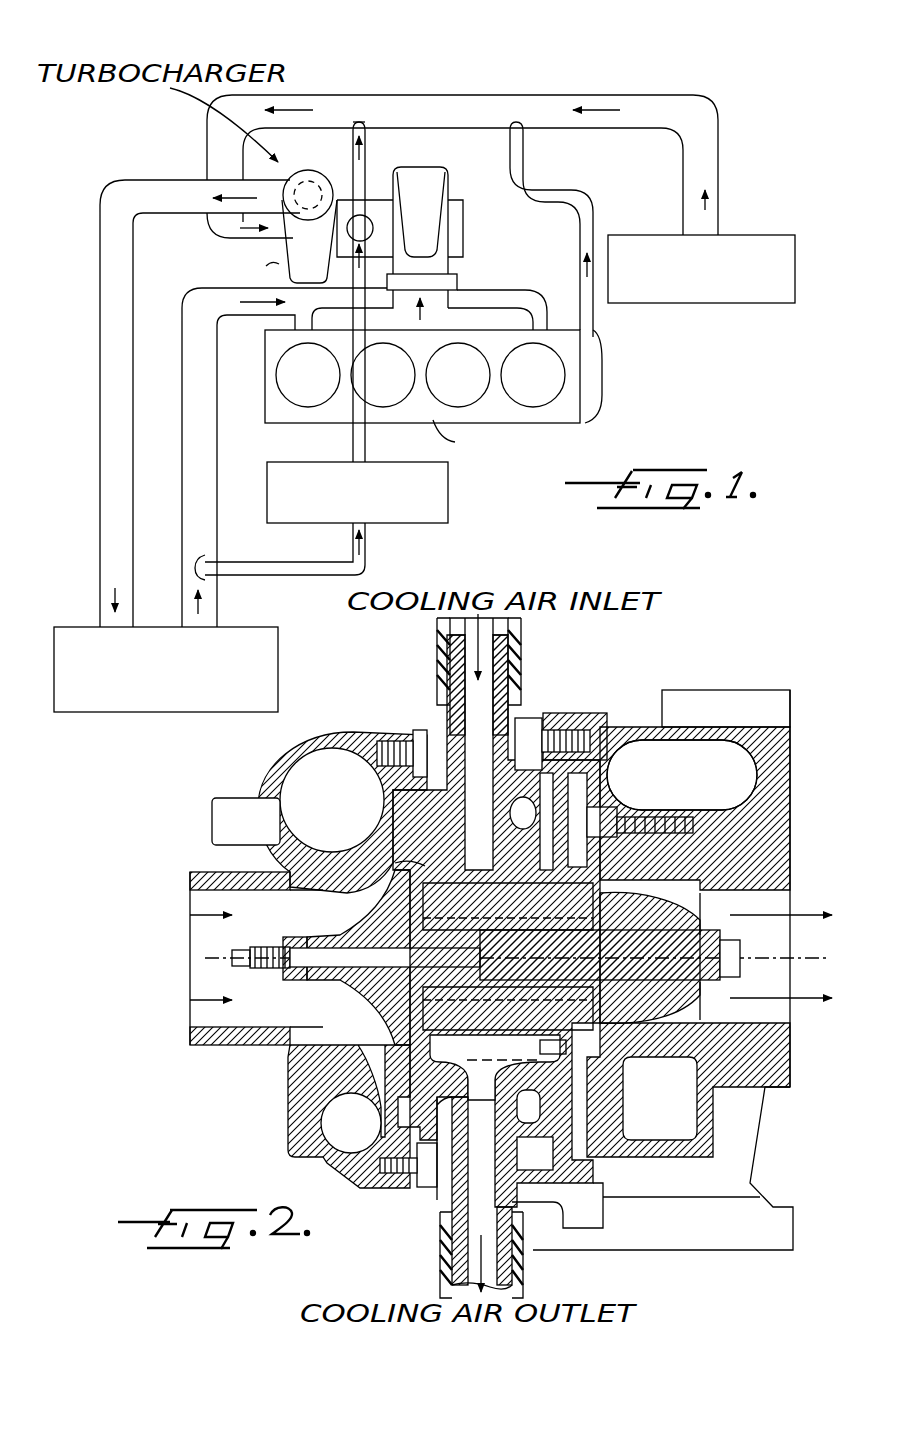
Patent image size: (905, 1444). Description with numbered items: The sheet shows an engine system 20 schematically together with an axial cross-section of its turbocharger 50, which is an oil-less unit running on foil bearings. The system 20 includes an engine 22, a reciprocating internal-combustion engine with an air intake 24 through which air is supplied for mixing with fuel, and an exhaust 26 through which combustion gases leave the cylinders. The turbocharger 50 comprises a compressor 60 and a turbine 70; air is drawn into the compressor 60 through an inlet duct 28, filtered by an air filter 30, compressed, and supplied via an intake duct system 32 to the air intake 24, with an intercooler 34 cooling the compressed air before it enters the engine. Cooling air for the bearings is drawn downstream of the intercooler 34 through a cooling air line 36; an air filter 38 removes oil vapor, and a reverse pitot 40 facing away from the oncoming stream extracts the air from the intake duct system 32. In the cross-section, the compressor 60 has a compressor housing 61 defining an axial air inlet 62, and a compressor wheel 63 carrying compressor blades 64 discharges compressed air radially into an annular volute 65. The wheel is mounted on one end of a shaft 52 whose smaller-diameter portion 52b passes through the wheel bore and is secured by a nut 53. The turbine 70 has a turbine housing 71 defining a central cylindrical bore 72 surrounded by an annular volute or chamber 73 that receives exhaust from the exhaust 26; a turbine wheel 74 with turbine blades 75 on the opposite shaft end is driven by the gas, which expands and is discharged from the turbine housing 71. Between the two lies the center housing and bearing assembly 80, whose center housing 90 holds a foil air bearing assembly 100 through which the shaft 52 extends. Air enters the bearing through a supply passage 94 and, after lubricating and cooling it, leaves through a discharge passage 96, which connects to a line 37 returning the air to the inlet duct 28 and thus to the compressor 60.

In FIG. 1, the engine system 20 is at (672, 32).
In FIG. 1, the engine 22 is at (605, 375).
In FIG. 1, the air intake 24 is at (342, 297).
In FIG. 1, the exhaust 26 is at (430, 293).
In FIG. 1, the inlet duct 28 is at (660, 105).
In FIG. 1, the air filter 30 is at (737, 240).
In FIG. 1, the intake duct system 32 is at (120, 398).
In FIG. 1, the intercooler 34 is at (70, 635).
In FIG. 1, the cooling air line 36 is at (360, 405).
In FIG. 2, the cooling air line 36 is at (437, 628).
In FIG. 1, the line 37 is at (363, 137).
In FIG. 2, the line 37 is at (520, 1290).
In FIG. 1, the air filter 38 is at (448, 490).
In FIG. 1, the reverse pitot 40 is at (212, 556).
In FIG. 1, the turbocharger 50 is at (323, 165).
In FIG. 2, the turbocharger 50 is at (682, 627).
In FIG. 2, the shaft 52 is at (565, 967).
In FIG. 2, the smaller-diameter portion 52b is at (350, 962).
In FIG. 2, the nut 53 is at (288, 943).
In FIG. 1, the compressor 60 is at (225, 240).
In FIG. 2, the compressor housing 61 is at (300, 1132).
In FIG. 2, the air inlet 62 is at (190, 902).
In FIG. 2, the compressor wheel 63 is at (355, 930).
In FIG. 2, the compressor blades 64 is at (357, 1013).
In FIG. 2, the volute 65 is at (320, 773).
In FIG. 1, the turbine 70 is at (435, 212).
In FIG. 2, the turbine 70 is at (658, 898).
In FIG. 2, the turbine housing 71 is at (758, 820).
In FIG. 2, the central cylindrical bore 72 is at (705, 1025).
In FIG. 2, the volute or chamber 73 is at (643, 760).
In FIG. 2, the turbine wheel 74 is at (735, 935).
In FIG. 2, the turbine blades 75 is at (667, 895).
In FIG. 2, the center housing and bearing assembly 80 is at (527, 705).
In FIG. 2, the center housing 90 is at (555, 1085).
In FIG. 2, the supply passage 94 is at (463, 733).
In FIG. 2, the discharge passage 96 is at (560, 1205).
In FIG. 2, the foil air bearing assembly 100 is at (450, 877).